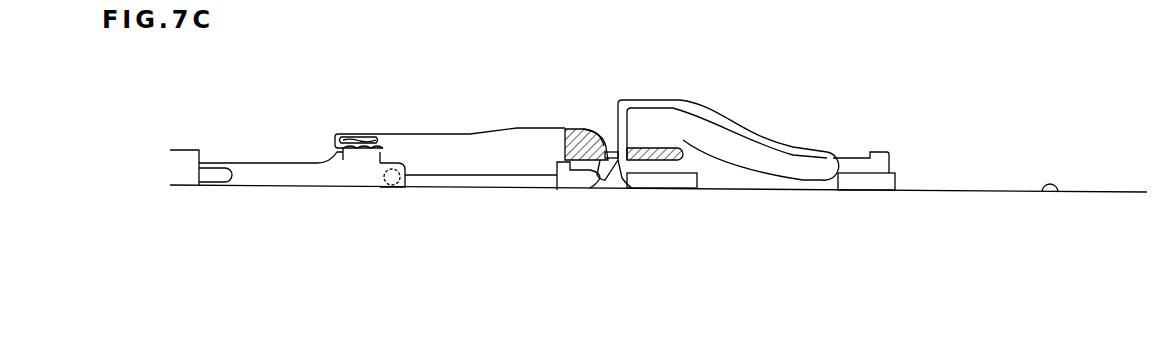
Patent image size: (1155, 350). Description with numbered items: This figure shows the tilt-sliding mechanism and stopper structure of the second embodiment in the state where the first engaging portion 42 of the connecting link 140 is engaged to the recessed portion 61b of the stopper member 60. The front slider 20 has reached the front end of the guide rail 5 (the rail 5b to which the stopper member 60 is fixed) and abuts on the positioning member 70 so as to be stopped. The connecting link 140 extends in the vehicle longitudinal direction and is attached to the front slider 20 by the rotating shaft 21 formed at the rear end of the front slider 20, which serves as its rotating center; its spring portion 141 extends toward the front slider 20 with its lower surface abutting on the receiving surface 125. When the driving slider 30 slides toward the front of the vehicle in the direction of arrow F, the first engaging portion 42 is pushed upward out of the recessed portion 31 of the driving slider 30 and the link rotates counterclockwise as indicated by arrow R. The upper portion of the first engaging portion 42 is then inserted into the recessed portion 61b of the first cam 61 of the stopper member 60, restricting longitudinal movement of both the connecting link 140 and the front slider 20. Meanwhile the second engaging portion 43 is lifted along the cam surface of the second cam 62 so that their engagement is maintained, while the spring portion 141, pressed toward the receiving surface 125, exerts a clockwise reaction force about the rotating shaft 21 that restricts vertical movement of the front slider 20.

The guide rail 5 is at (1004, 189).
The guide rail 5b is at (1056, 194).
The front slider 20 is at (273, 162).
The rotating shaft 21 is at (393, 188).
The driving slider 30 is at (659, 94).
The recessed portion 31 is at (600, 183).
The first engaging portion 42 is at (623, 170).
The second engaging portion 43 is at (587, 127).
The stopper member 60 is at (673, 137).
The first cam 61 is at (643, 162).
The recessed portion 61b is at (620, 146).
The second cam 62 is at (640, 146).
The positioning member 70 is at (187, 160).
The receiving surface 125 is at (343, 158).
The connecting link 140 is at (468, 121).
The spring portion 141 is at (340, 132).